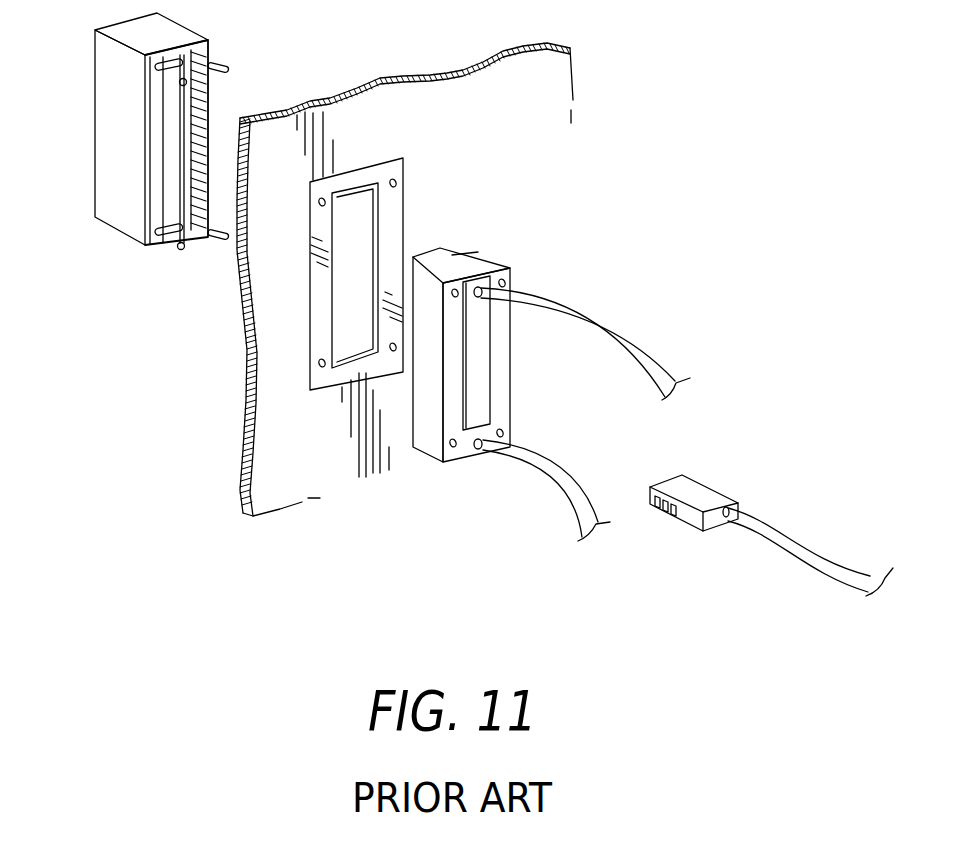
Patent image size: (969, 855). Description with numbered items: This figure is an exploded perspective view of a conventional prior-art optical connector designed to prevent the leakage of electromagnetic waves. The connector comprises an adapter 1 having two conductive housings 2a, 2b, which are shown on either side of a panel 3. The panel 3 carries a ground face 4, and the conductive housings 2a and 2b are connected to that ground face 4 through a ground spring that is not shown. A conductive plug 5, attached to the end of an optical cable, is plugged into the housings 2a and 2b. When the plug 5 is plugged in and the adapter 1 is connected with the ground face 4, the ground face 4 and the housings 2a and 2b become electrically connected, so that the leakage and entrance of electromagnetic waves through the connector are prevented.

The adapter 1 is at (545, 370).
The conductive housing 2a is at (430, 407).
The conductive housing 2b is at (120, 132).
The panel 3 is at (463, 145).
The ground face 4 is at (320, 296).
The conductive plug 5 is at (695, 493).